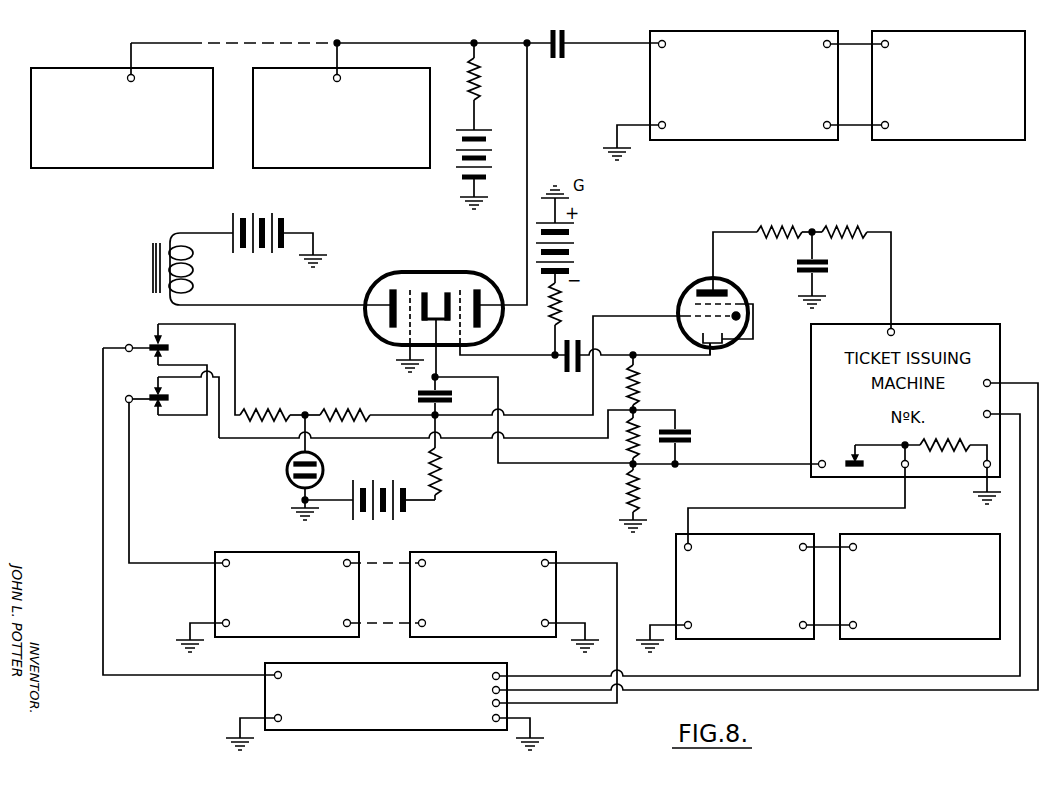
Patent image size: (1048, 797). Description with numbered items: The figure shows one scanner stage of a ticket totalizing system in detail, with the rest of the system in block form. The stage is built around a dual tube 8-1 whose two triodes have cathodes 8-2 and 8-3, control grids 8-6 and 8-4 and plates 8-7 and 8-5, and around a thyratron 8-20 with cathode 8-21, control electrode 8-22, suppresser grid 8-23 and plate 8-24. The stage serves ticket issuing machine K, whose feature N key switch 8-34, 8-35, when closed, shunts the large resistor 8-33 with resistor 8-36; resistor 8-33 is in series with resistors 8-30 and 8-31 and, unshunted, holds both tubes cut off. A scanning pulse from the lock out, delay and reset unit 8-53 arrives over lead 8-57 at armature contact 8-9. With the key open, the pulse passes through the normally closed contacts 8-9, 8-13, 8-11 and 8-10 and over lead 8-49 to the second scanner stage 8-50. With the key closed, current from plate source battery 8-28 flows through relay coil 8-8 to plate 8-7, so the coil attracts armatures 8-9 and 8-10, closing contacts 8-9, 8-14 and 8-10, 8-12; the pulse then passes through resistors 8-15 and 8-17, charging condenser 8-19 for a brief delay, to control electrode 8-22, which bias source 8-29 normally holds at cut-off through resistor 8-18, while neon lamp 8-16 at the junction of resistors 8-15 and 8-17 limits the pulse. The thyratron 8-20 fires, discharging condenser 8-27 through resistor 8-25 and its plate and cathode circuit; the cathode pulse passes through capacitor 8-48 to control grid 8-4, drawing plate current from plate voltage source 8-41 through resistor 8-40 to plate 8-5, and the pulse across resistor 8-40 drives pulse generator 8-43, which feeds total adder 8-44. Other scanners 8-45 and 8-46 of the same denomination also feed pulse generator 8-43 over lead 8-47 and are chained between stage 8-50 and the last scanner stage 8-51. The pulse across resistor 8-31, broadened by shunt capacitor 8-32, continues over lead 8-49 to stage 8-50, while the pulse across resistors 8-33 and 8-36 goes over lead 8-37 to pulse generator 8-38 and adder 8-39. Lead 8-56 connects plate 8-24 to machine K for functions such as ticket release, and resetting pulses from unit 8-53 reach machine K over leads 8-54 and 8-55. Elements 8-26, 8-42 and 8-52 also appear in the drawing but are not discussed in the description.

The dual tube 8-1 is at (444, 215).
The cathode 8-2 is at (424, 290).
The cathode 8-3 is at (447, 290).
The control grid 8-4 is at (462, 290).
The plate 8-5 is at (480, 323).
The control grid 8-6 is at (410, 288).
The plate 8-7 is at (388, 300).
The relay coil 8-8 is at (192, 282).
The armature contact 8-9 is at (141, 345).
The armature contact 8-10 is at (149, 395).
The contact 8-11 is at (156, 411).
The contact 8-12 is at (164, 389).
The contact 8-13 is at (163, 352).
The contact 8-14 is at (153, 338).
The resistor 8-15 is at (291, 409).
The neon lamp 8-16 is at (286, 477).
The resistor 8-17 is at (365, 409).
The resistor 8-18 is at (441, 472).
The condenser 8-19 is at (452, 391).
The thyratron 8-20 is at (712, 302).
The cathode 8-21 is at (717, 345).
The control electrode 8-22 is at (696, 316).
The suppresser grid 8-23 is at (736, 304).
The plate 8-24 is at (742, 280).
The resistor 8-25 is at (791, 224).
The resistor 8-26 is at (823, 224).
The condenser 8-27 is at (828, 268).
The plate source battery 8-28 is at (277, 213).
The bias source 8-29 is at (398, 480).
The resistor 8-30 is at (641, 396).
The resistor 8-31 is at (627, 441).
The shunt capacitor 8-32 is at (692, 437).
The resistor 8-33 is at (627, 490).
The key switch 8-34 is at (855, 468).
The key switch 8-35 is at (847, 454).
The resistor 8-36 is at (920, 450).
The lead 8-37 is at (796, 495).
The pulse generator 8-38 is at (766, 534).
The adder 8-39 is at (930, 534).
The resistor 8-40 is at (477, 86).
The plate voltage source 8-41 is at (459, 170).
The capacitor 8-42 is at (563, 58).
The pulse generator 8-43 is at (721, 140).
The total adder 8-44 is at (924, 140).
The scanner block 8-45 is at (97, 168).
The scanner block 8-46 is at (321, 168).
The lead 8-47 is at (342, 33).
The capacitor 8-48 is at (566, 372).
The lead 8-49 is at (175, 483).
The second scanner stage 8-50 is at (256, 552).
The last scanner stage 8-51 is at (512, 552).
The conductor 8-52 is at (618, 598).
The lock out, delay and reset unit 8-53 is at (404, 732).
The lead 8-54 is at (920, 677).
The lead 8-55 is at (920, 695).
The lead 8-56 is at (891, 274).
The lead 8-57 is at (188, 524).